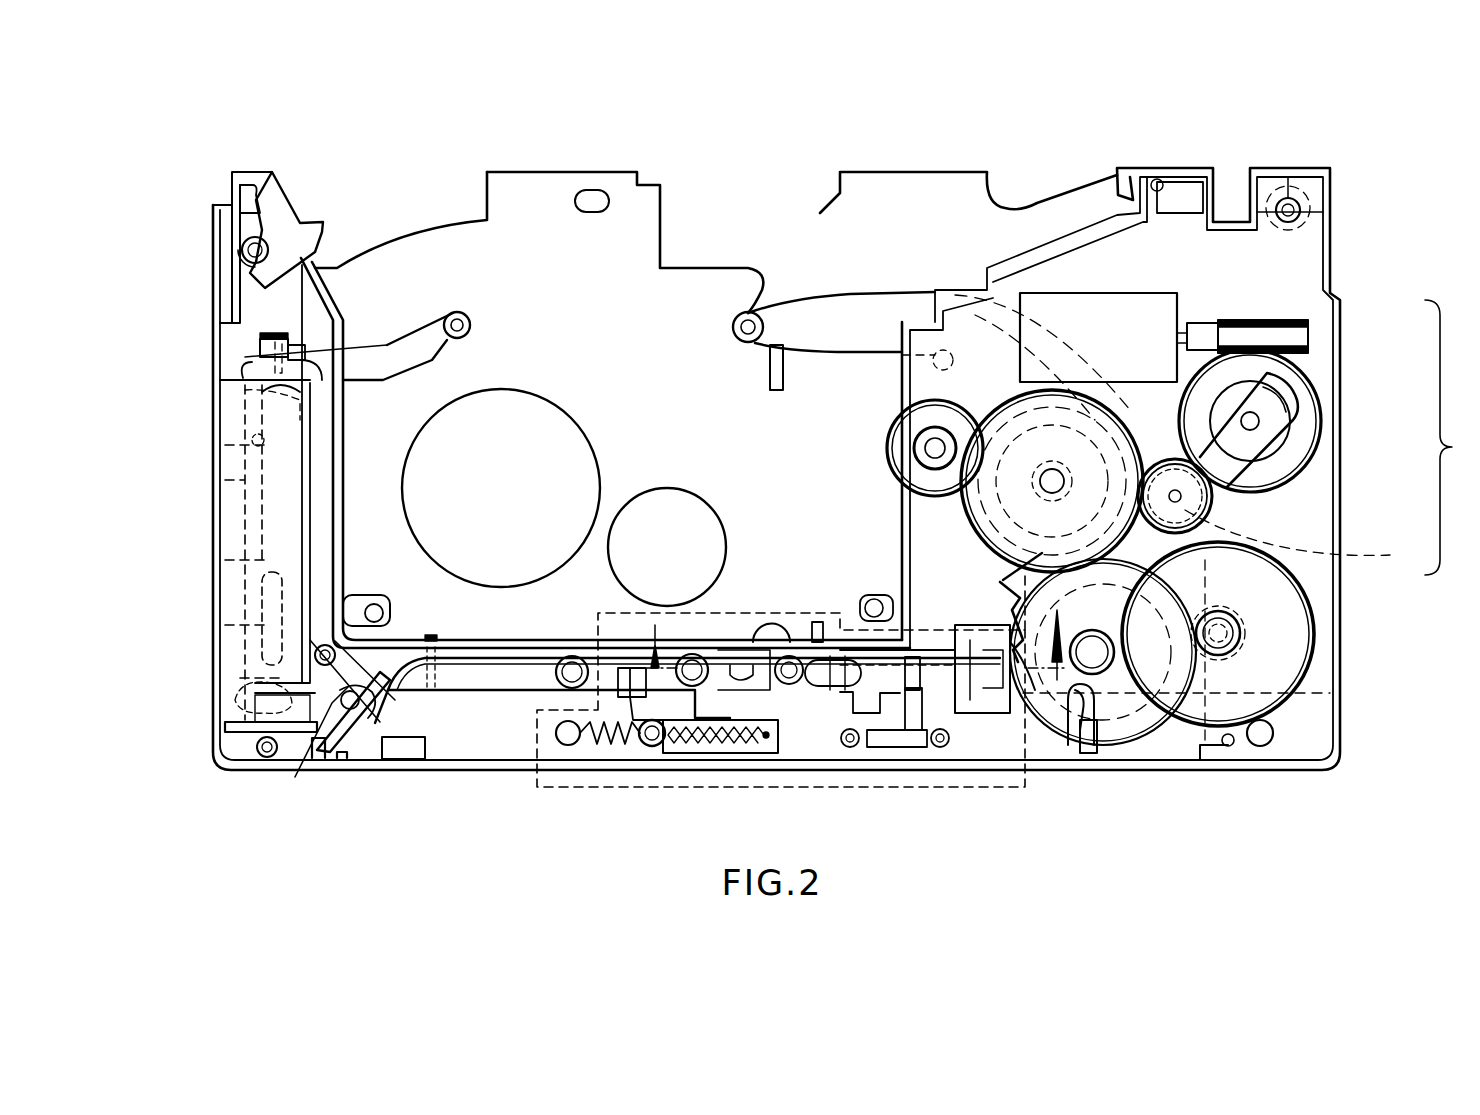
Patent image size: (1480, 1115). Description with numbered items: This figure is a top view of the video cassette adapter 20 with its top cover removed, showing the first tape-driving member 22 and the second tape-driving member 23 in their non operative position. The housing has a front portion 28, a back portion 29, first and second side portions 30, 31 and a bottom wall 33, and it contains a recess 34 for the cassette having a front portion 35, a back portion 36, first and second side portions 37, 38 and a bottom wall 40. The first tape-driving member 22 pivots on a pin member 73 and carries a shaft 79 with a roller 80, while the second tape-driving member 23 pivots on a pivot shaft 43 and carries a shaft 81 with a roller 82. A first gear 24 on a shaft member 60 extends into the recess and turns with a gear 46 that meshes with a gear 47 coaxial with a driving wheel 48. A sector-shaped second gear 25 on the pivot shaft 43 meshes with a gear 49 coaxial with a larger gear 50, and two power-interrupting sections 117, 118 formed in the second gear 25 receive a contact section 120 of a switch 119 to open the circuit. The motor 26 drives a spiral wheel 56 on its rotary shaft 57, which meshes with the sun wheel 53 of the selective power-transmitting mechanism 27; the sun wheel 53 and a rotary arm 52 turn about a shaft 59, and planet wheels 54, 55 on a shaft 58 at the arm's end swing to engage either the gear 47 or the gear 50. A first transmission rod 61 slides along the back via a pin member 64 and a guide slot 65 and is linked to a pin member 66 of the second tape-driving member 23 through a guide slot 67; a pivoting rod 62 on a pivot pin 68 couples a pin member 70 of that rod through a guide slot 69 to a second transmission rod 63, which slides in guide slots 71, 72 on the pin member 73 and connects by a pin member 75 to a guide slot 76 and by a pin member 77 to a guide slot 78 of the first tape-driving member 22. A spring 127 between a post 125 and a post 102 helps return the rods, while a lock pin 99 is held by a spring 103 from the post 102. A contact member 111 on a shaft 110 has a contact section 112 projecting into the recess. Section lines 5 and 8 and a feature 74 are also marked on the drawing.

The video cassette adapter 20 is at (1078, 136).
The front portion 28 is at (422, 172).
The bottom wall 33 is at (920, 214).
The second tape-driving member 23 is at (848, 294).
The motor 26 is at (1135, 300).
The rotary shaft 57 is at (1185, 328).
The spiral wheel 56 is at (1310, 340).
The sun wheel 53 is at (1305, 387).
The shaft 59 is at (1262, 417).
The rotary arm 52 is at (1290, 455).
The selective power-transmitting mechanism 27 is at (1451, 437).
The planet wheel 54 is at (1180, 495).
The shaft 58 is at (1205, 505).
The planet wheel 55 is at (1302, 541).
The second side portion 31 is at (1342, 637).
The gear 50 is at (1300, 690).
The gear 49 is at (1176, 652).
The pin member 64 is at (1262, 745).
The guide slot 65 is at (1228, 748).
The second gear 25 is at (1120, 746).
The pin member 66 is at (1094, 722).
The guide slot 67 is at (1075, 742).
The power-interrupting section 118 is at (1030, 690).
The pivot shaft 43 is at (1095, 630).
The section line 5 is at (852, 633).
The contact section 120 is at (1010, 578).
The power-interrupting section 117 is at (980, 640).
The switch 119 is at (985, 714).
The driving wheel 48 is at (968, 535).
The second side portion 38 is at (900, 518).
The gear 46 is at (900, 468).
The shaft member 60 is at (925, 447).
The first gear 24 is at (900, 428).
The gear 47 is at (1000, 395).
The bottom wall 40 is at (622, 452).
The roller 82 is at (735, 322).
The shaft 81 is at (742, 340).
The roller 80 is at (457, 312).
The shaft 79 is at (470, 325).
The first tape-driving member 22 is at (435, 365).
The front portion 35 is at (566, 298).
The guide slot 78 is at (310, 387).
The pin member 77 is at (330, 420).
The pin member 73 is at (245, 356).
The guide slot 71 is at (250, 446).
The second transmission rod 63 is at (240, 485).
The first side portion 30 is at (212, 520).
The spring 74 is at (265, 572).
The guide slot 72 is at (262, 626).
The guide slot 76 is at (240, 678).
The pin member 75 is at (290, 712).
The first side portion 37 is at (345, 455).
The pivot pin 68 is at (362, 597).
The pivoting rod 62 is at (385, 662).
The recess 34 is at (514, 627).
The back portion 36 is at (548, 657).
The shaft 110 is at (692, 655).
The contact member 111 is at (750, 660).
The contact section 112 is at (815, 622).
The guide slot 69 is at (295, 777).
The pin member 70 is at (380, 742).
The back portion 29 is at (437, 772).
The first transmission rod 61 is at (493, 745).
The section area 8 is at (541, 790).
The post 125 is at (570, 745).
The spring 127 is at (608, 745).
The post 102 is at (650, 745).
The spring 103 is at (725, 745).
The lock pin 99 is at (780, 745).